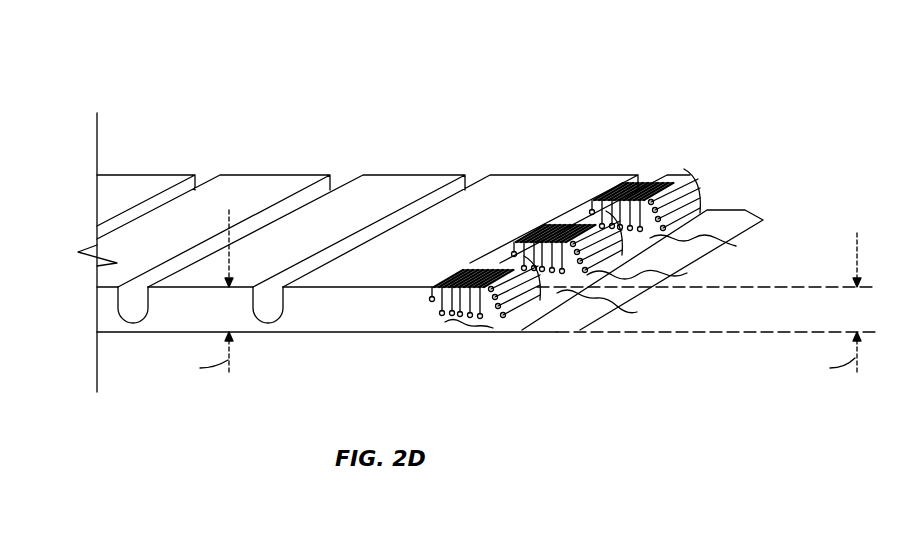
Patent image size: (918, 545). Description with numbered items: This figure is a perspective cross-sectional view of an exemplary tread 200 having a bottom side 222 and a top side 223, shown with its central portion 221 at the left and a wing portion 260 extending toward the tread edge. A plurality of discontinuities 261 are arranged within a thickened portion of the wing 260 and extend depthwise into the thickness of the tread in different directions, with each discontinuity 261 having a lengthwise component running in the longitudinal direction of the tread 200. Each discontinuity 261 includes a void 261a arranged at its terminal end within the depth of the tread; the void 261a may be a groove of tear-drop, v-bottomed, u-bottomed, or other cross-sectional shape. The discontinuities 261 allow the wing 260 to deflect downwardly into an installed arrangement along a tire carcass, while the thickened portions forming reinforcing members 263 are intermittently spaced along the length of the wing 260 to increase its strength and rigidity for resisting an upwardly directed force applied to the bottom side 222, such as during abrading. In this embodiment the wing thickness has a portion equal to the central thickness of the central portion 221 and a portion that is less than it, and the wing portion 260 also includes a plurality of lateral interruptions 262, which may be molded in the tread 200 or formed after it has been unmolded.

The tread 200 is at (112, 88).
The central portion 221 is at (446, 122).
The bottom side 222 is at (363, 333).
The top side 223 is at (365, 185).
The wing portion 260 is at (723, 208).
The discontinuity 261 is at (465, 273).
The void 261a is at (517, 253).
The lateral interruption 262 is at (707, 250).
The reinforcing member 263 is at (655, 272).